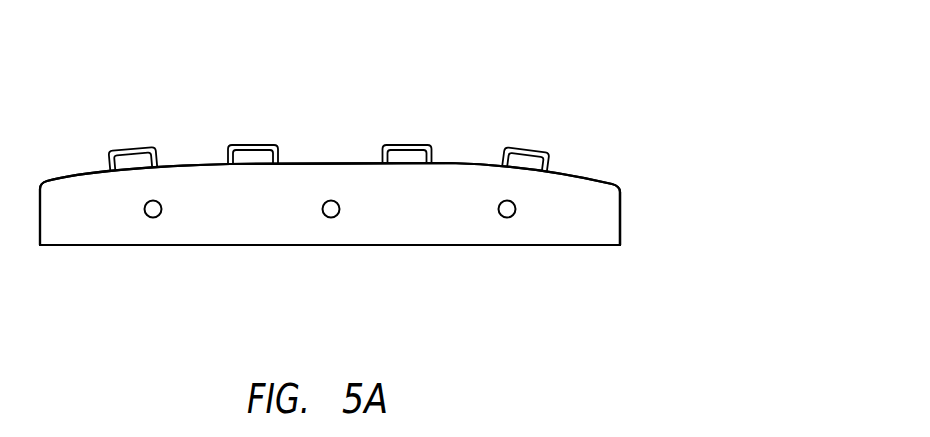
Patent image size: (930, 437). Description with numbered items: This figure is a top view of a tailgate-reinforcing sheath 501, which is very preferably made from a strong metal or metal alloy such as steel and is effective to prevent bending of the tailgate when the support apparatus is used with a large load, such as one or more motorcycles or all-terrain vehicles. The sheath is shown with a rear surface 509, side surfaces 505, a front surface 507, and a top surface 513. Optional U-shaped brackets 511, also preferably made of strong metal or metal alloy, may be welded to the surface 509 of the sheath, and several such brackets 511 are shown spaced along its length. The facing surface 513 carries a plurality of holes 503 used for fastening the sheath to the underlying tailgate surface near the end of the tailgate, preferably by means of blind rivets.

The tailgate-reinforcing sheath 501 is at (637, 147).
The aperture 503 is at (512, 213).
The side surfaces 505 is at (620, 230).
The front surface 507 is at (220, 245).
The rear surface 509 is at (332, 164).
The U-shaped brackets 511 is at (532, 152).
The top surface 513 is at (417, 227).